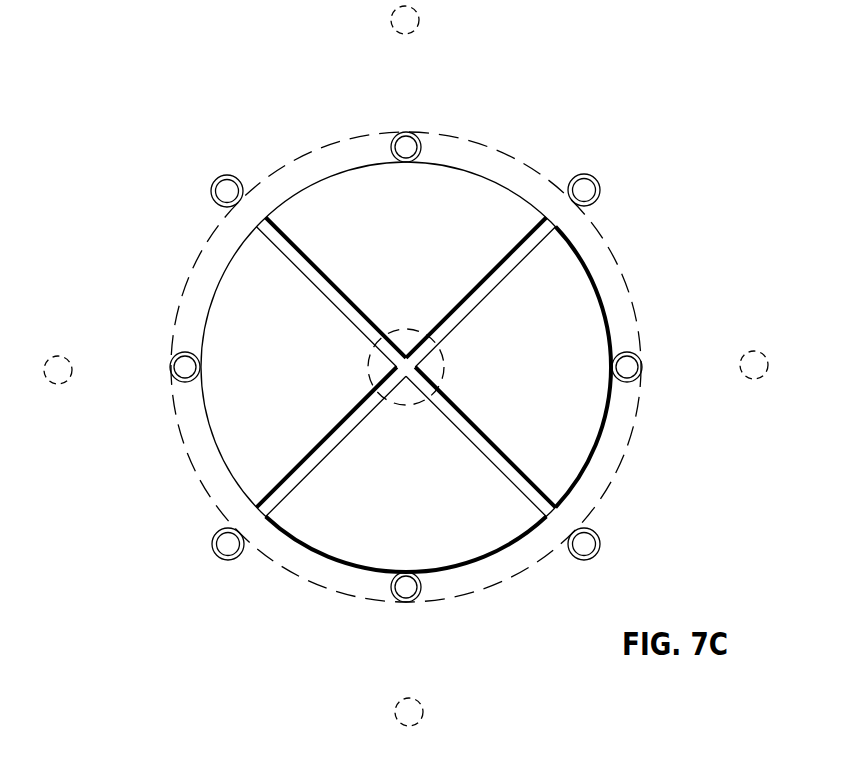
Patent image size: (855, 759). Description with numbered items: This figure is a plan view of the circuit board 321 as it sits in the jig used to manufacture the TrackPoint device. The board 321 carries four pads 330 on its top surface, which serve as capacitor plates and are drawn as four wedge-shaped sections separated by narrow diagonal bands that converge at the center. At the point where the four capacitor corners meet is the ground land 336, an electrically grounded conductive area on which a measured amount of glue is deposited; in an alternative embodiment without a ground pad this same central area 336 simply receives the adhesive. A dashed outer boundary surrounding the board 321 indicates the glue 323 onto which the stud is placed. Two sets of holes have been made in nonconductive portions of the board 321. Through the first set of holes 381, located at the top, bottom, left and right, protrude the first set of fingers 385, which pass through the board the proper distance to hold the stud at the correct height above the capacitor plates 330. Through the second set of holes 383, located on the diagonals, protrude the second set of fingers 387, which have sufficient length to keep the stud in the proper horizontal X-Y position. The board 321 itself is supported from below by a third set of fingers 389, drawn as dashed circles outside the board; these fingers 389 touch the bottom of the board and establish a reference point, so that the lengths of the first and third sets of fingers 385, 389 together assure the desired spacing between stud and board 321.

The circuit board 321 is at (660, 247).
The glue 323 is at (632, 297).
The pads 330 is at (422, 221).
The ground land 336 is at (401, 330).
The first set of holes 381 is at (400, 133).
The second set of holes 383 is at (215, 181).
The first set of fingers 385 is at (404, 366).
The second set of fingers 387 is at (404, 349).
The third set of fingers 389 is at (391, 21).